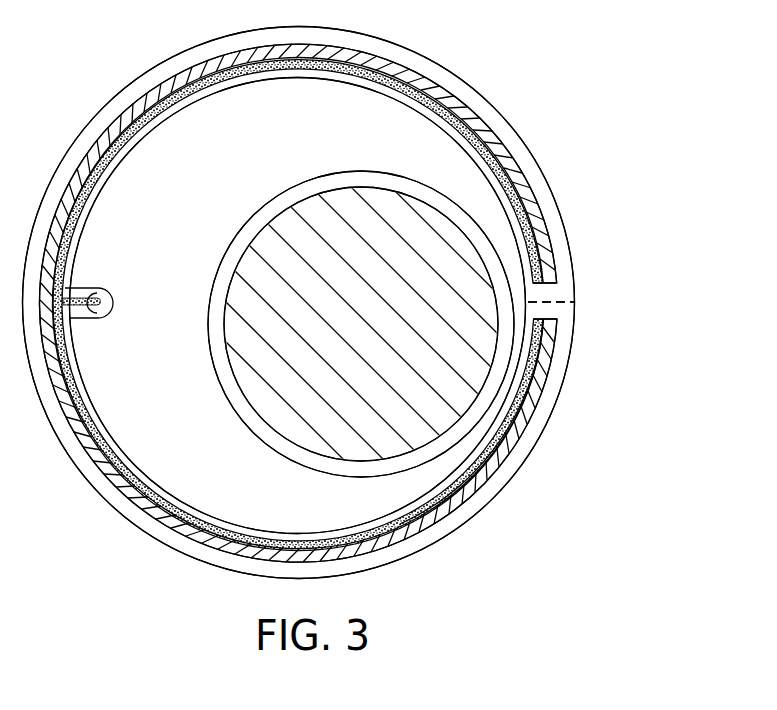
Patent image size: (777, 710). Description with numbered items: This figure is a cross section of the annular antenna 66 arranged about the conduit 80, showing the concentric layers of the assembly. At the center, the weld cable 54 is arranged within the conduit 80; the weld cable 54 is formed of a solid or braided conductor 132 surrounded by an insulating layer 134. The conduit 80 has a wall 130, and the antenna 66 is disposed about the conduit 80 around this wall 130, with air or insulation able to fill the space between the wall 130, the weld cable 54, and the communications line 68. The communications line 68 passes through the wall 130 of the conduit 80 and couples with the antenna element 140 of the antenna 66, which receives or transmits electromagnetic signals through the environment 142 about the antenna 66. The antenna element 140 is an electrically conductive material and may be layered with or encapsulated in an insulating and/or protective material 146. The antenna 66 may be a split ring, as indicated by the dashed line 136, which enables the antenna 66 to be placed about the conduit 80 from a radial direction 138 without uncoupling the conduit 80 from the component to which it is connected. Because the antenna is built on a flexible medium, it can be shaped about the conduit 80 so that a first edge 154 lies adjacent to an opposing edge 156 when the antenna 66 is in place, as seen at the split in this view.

The environment 142 is at (577, 93).
The antenna 66 is at (483, 92).
The insulating and/or protective material 146 is at (547, 193).
The first edge 154 is at (547, 271).
The antenna element 140 is at (379, 81).
The opposing edge 156 is at (535, 377).
The wall 130 is at (118, 177).
The conduit 80 is at (198, 100).
The dashed line 136 is at (548, 302).
The radial direction 138 is at (627, 322).
The communications line 68 is at (102, 315).
The weld cable 54 is at (256, 433).
The insulating layer 134 is at (405, 174).
The conductor 132 is at (283, 230).